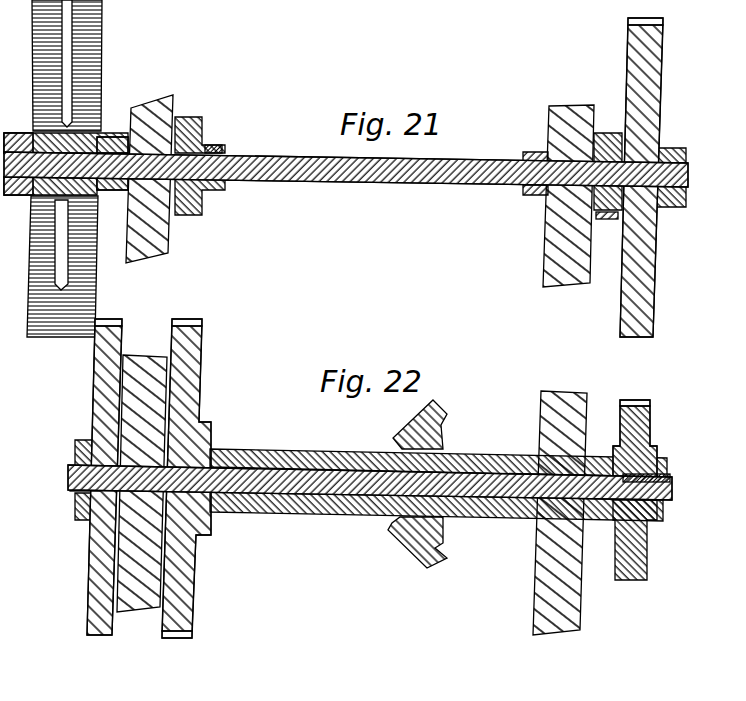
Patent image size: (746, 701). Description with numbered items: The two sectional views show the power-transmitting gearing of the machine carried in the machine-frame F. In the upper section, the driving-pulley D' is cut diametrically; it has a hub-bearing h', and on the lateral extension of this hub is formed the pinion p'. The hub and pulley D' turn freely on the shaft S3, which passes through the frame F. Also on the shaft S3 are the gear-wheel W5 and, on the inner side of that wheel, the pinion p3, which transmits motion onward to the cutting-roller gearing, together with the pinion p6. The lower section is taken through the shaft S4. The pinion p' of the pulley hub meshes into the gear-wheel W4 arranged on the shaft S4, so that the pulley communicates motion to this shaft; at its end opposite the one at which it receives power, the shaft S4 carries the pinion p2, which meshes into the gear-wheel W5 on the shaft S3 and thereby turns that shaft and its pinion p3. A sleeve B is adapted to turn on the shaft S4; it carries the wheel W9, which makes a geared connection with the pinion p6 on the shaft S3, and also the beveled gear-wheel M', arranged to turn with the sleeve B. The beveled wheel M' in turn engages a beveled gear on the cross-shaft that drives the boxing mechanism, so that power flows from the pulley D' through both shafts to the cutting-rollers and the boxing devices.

In FIG. 21, the driving-pulley D' is at (79, 168).
In FIG. 21, the hub-bearing h' is at (66, 154).
In FIG. 21, the pinion p' is at (112, 151).
In FIG. 21, the machine-frame F is at (360, 182).
In FIG. 22, the machine-frame F is at (352, 481).
In FIG. 21, the pinion p6 is at (207, 117).
In FIG. 21, the shaft S3 is at (346, 167).
In FIG. 21, the pinion p3 is at (598, 219).
In FIG. 21, the gear-wheel W5 is at (656, 257).
In FIG. 22, the gear-wheel W4 is at (124, 299).
In FIG. 22, the wheel W9 is at (205, 298).
In FIG. 22, the sleeve B is at (300, 455).
In FIG. 22, the shaft S4 is at (370, 482).
In FIG. 22, the beveled gear-wheel M' is at (425, 479).
In FIG. 22, the pinion p2 is at (628, 400).